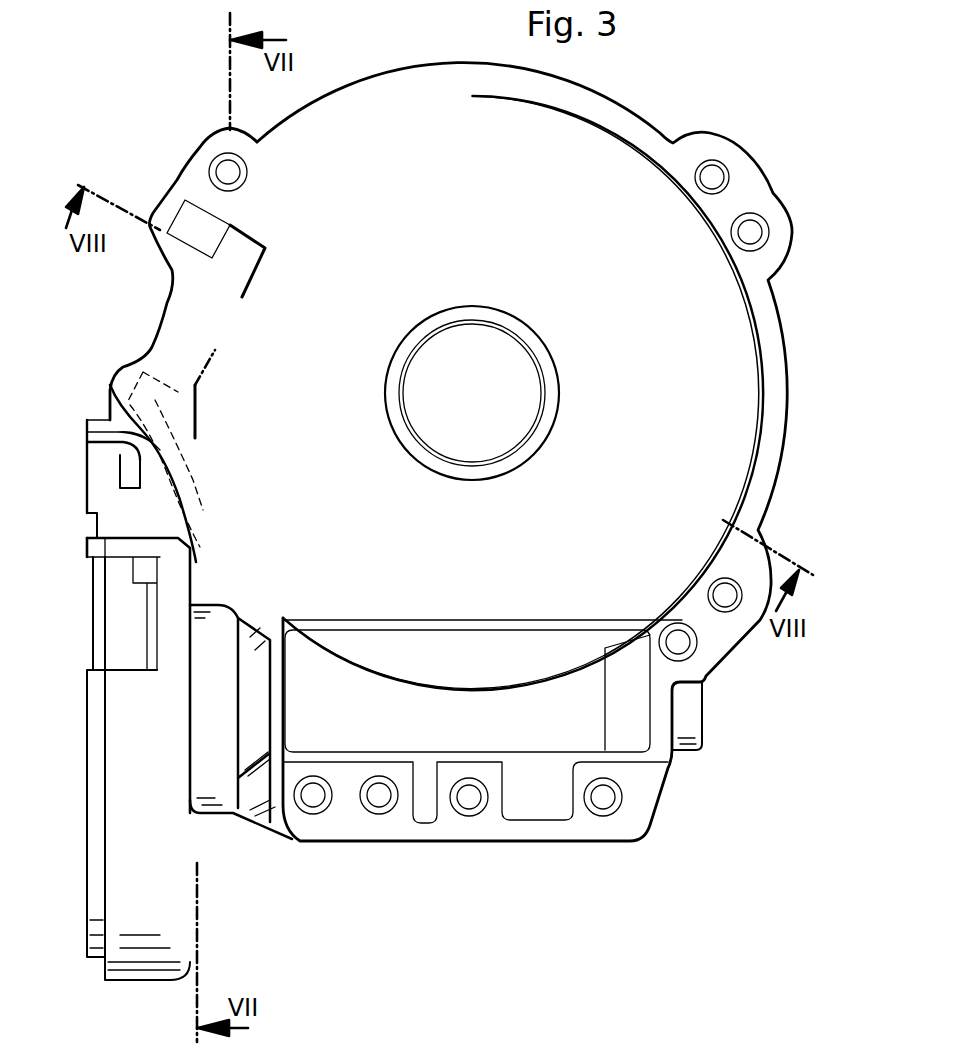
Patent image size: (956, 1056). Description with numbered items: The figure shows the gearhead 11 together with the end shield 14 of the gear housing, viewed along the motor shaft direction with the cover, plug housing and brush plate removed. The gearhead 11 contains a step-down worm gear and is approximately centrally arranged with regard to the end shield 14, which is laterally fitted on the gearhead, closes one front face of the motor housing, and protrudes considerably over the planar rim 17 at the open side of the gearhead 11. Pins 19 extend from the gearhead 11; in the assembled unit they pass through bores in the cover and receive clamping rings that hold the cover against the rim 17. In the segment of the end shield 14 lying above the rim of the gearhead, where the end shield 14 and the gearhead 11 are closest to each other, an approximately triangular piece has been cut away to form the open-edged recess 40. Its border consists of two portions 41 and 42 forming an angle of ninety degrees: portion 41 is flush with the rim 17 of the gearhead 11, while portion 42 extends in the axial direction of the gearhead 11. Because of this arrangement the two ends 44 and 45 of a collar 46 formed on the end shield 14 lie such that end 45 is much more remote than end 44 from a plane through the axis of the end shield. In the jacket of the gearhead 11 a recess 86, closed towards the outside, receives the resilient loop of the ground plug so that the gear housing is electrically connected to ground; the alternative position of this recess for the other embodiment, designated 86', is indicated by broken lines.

The gearhead 11 is at (534, 259).
The end shield 14 is at (213, 803).
The planar rim 17 is at (172, 200).
The pins 19 is at (228, 172).
The recess 40 is at (107, 492).
The portion 41 is at (108, 419).
The portion 42 is at (118, 528).
The end 44 is at (118, 432).
The end 45 is at (102, 532).
The collar 46 is at (123, 862).
The recess 86 is at (198, 178).
The recess 86' is at (205, 448).